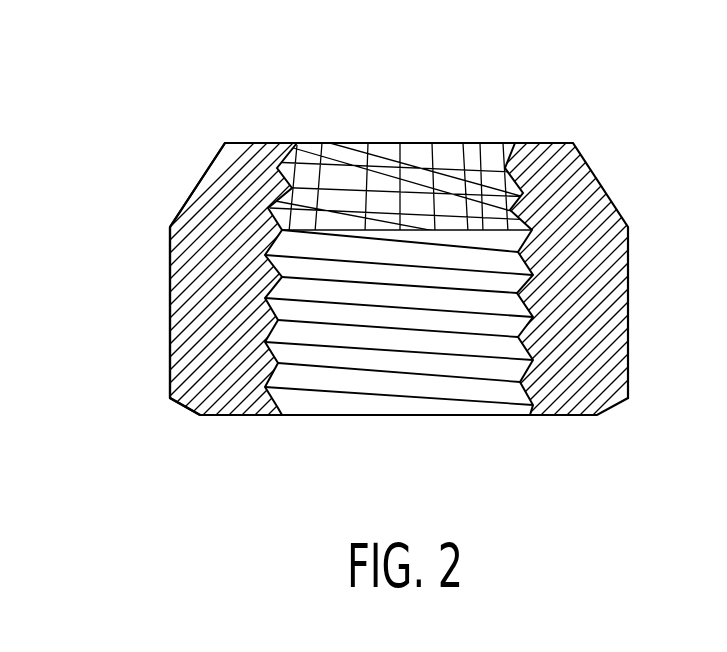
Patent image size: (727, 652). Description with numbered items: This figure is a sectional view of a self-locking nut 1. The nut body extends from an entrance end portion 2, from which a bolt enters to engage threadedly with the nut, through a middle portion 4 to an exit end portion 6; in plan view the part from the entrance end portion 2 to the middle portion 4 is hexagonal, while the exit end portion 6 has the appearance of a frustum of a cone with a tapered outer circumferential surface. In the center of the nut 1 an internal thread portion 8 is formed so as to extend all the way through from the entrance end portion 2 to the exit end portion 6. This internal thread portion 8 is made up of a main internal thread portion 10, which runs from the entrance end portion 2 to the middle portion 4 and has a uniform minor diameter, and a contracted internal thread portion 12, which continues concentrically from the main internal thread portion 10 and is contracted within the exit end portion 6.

The self-locking nut 1 is at (443, 70).
The entrance end portion 2 is at (178, 421).
The middle portion 4 is at (165, 307).
The exit end portion 6 is at (176, 173).
The internal thread portion 8 is at (520, 355).
The main internal thread portion 10 is at (279, 325).
The contracted internal thread portion 12 is at (285, 190).